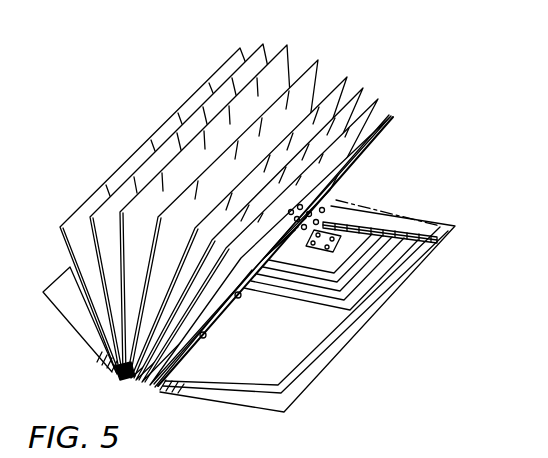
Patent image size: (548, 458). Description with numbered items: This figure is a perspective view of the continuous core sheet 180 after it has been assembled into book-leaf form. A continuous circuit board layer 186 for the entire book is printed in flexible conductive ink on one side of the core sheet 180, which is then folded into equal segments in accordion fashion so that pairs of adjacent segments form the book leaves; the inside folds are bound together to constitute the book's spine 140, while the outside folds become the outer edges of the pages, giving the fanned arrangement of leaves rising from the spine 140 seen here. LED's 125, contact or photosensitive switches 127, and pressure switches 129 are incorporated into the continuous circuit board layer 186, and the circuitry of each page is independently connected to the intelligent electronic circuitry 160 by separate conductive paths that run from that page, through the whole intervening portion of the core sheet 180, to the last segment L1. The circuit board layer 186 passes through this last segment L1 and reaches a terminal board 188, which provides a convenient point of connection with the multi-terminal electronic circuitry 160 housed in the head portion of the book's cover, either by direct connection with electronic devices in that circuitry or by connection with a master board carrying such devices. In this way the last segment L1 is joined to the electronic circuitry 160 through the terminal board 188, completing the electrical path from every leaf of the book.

The continuous core sheet 180 is at (447, 105).
The contact or photosensitive switches 127 is at (330, 213).
The terminal board 188 is at (395, 226).
The intelligent electronic circuitry 160 is at (433, 222).
The continuous circuit board layer 186 is at (387, 275).
The last segment L1 is at (330, 357).
The pressure switches 129 is at (239, 297).
The LED's 125 is at (205, 337).
The spine 140 is at (141, 390).